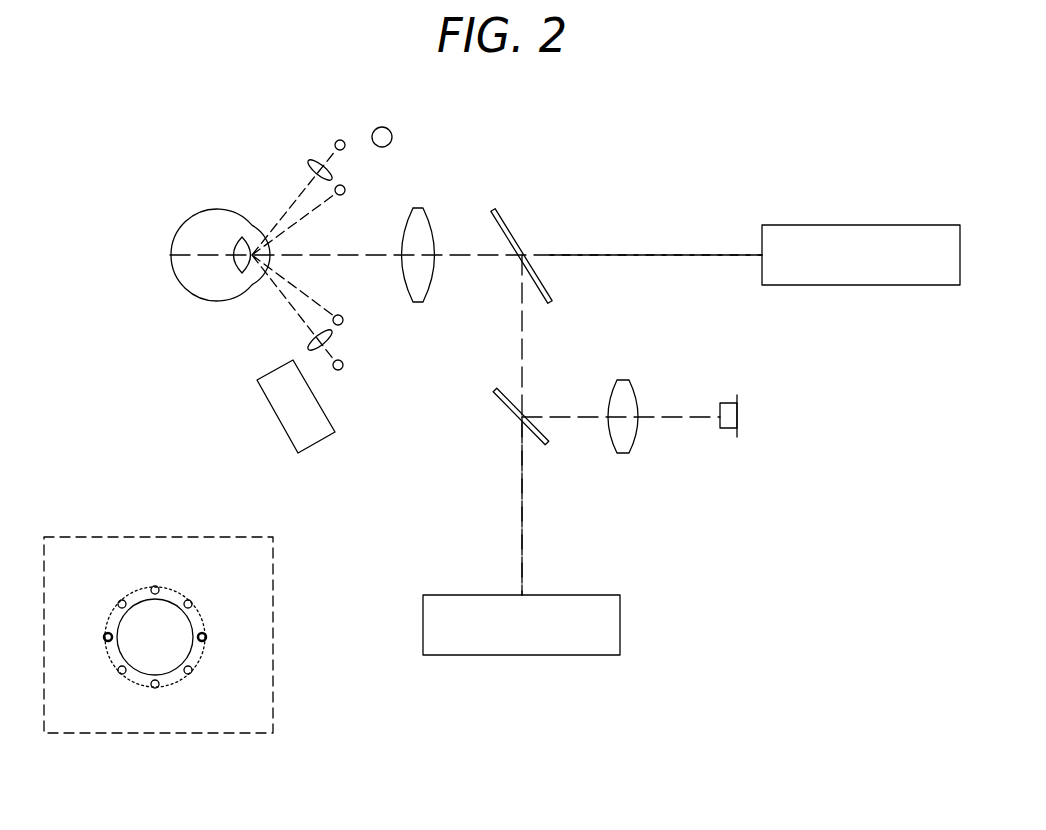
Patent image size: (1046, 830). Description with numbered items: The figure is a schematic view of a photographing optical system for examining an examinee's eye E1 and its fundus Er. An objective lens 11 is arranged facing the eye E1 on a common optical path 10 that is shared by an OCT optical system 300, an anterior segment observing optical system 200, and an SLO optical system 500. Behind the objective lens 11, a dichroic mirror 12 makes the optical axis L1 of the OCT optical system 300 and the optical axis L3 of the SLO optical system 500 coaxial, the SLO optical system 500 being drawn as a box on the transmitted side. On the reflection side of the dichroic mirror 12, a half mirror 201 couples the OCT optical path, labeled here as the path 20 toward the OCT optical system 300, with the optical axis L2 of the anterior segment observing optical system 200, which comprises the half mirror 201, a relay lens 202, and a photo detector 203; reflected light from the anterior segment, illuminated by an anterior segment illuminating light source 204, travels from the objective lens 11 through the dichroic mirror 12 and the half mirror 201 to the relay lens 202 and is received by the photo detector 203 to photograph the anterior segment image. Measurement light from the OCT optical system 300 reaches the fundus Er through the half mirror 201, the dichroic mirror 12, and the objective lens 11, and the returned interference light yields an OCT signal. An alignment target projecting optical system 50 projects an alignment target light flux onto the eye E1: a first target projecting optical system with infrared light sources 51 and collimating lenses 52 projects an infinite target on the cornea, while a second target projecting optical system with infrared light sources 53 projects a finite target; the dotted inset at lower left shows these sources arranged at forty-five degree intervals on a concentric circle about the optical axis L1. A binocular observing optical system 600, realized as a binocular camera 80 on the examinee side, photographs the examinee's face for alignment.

The common optical path 10 is at (478, 266).
The objective lens 11 is at (424, 209).
The dichroic mirror 12 is at (498, 208).
The OCT optical path 20 is at (506, 361).
The alignment target projecting optical system 50 is at (299, 246).
The infrared light sources 51 is at (335, 141).
The collimating lenses 52 is at (309, 167).
The infrared light sources 53 is at (335, 190).
The binocular camera 80 is at (308, 437).
The anterior segment observing optical system 200 is at (624, 414).
The half mirror 201 is at (504, 405).
The relay lens 202 is at (632, 436).
The photo detector 203 is at (728, 428).
The anterior segment illuminating light source 204 is at (383, 127).
The OCT optical system 300 is at (555, 655).
The SLO optical system 500 is at (862, 224).
The binocular observing optical system 600 is at (155, 586).
The examinee's eye E1 is at (200, 249).
The fundus Er is at (172, 266).
The optical axis of the OCT optical system L1 is at (585, 416).
The optical axis of the anterior segment observing optical system L2 is at (521, 517).
The optical axis of the SLO optical system L3 is at (665, 254).